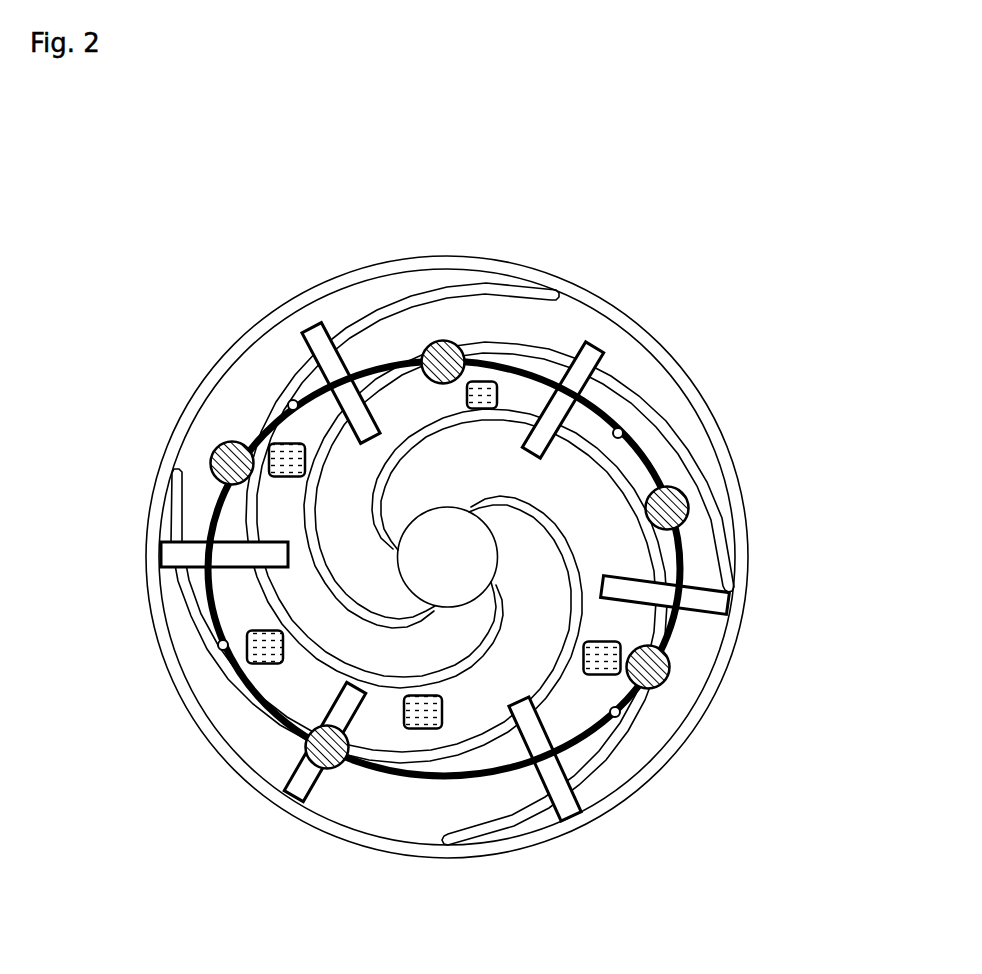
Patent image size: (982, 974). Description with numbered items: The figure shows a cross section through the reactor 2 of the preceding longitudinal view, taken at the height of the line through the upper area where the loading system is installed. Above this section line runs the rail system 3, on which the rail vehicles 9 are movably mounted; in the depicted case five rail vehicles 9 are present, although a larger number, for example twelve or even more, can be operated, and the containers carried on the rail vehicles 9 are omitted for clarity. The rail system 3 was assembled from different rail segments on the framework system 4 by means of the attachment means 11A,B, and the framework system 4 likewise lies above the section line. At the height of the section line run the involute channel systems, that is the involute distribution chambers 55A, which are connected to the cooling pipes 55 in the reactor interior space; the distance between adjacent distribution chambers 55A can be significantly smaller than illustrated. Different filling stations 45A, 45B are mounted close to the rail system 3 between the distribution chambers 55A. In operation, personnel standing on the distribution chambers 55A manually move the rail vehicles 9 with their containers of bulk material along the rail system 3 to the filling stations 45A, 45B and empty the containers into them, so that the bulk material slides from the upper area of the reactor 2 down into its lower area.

The reactor 2 is at (650, 317).
The rail system 3 is at (637, 442).
The framework system 4 is at (335, 358).
The rail vehicles 9 is at (210, 463).
The attachment means 11A,B is at (287, 403).
The filling station 45A is at (605, 678).
The filling station 45B is at (493, 380).
The cooling pipes 55 is at (710, 488).
The distribution chambers 55A is at (297, 360).